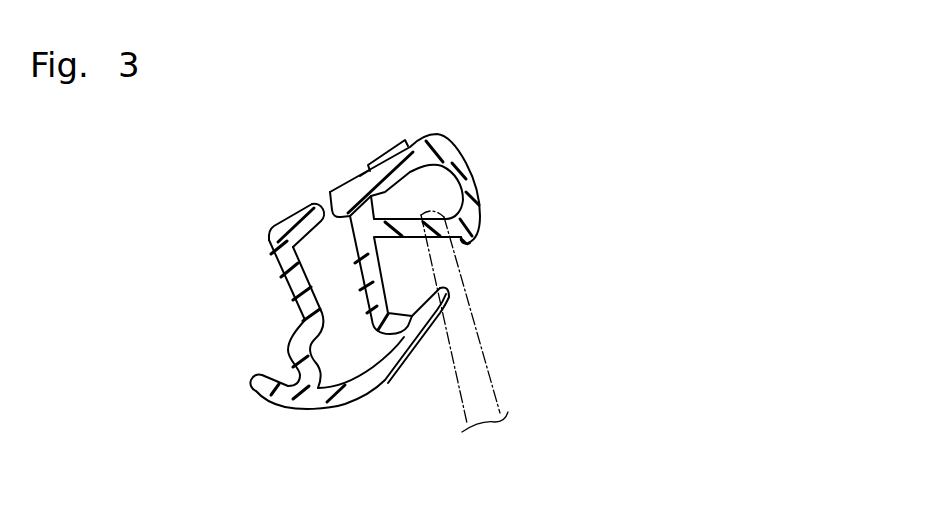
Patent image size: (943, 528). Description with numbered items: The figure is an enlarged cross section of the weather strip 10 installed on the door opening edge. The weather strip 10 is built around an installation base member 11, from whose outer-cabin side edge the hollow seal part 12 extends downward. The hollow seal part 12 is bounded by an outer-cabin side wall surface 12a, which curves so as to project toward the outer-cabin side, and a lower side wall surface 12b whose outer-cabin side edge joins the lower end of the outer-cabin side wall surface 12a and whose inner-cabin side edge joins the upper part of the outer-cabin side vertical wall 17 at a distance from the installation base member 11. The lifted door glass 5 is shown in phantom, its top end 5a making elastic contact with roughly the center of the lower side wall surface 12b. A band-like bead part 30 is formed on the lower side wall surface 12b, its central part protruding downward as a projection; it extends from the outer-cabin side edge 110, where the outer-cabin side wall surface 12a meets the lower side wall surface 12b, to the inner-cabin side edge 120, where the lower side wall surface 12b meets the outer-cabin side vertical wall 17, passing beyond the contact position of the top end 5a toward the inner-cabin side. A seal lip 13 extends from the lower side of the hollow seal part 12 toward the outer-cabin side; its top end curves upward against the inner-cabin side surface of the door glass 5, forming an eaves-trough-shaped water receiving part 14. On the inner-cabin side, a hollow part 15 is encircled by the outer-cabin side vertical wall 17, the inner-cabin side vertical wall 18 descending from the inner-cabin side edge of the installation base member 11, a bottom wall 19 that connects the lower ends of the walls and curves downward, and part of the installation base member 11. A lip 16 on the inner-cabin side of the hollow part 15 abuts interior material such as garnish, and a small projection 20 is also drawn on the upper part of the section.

The weather strip 10 is at (520, 85).
The installation base member 11 is at (300, 214).
The hollow seal part 12 is at (478, 168).
The outer-cabin side wall surface 12a is at (458, 152).
The lower side wall surface 12b is at (413, 214).
The seal lip 13 is at (447, 293).
The water receiving part 14 is at (428, 305).
The hollow part 15 is at (358, 362).
The lip 16 is at (261, 386).
The outer-cabin side vertical wall 17 is at (370, 263).
The inner-cabin side vertical wall 18 is at (289, 282).
The bottom wall 19 is at (386, 386).
The projection 20 is at (371, 164).
The inner-cabin side edge 120 is at (366, 175).
The bead part 30 is at (475, 243).
The outer-cabin side edge 110 is at (474, 232).
The door glass 5 is at (493, 387).
The top end 5a is at (445, 214).